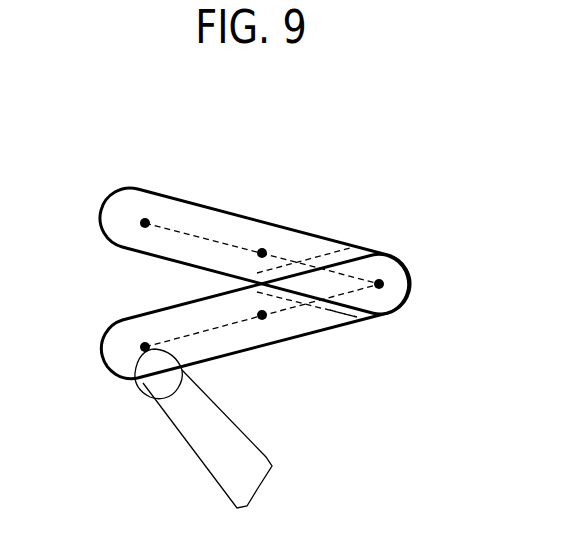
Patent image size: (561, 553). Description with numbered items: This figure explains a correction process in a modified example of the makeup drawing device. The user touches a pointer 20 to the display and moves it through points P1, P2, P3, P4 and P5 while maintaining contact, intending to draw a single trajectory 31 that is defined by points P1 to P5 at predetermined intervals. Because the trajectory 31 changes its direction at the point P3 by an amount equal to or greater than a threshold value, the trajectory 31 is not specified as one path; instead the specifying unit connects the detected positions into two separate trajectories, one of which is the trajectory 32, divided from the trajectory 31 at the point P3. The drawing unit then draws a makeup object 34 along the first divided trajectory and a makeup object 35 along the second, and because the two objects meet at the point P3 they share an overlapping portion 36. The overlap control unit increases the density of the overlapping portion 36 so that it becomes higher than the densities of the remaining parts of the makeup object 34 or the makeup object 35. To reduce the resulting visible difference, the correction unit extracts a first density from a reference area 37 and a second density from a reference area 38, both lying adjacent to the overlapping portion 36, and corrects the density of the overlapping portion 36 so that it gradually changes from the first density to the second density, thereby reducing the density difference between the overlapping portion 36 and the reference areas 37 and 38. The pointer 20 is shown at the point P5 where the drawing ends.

The pointer 20 is at (198, 439).
The trajectory 31 is at (262, 231).
The trajectory 32 is at (218, 241).
The makeup object 34 is at (362, 245).
The makeup object 35 is at (103, 370).
The overlapping portion 36 is at (343, 316).
The reference area 37 is at (323, 251).
The reference area 38 is at (315, 308).
The point P1 is at (145, 222).
The point P2 is at (262, 252).
The point P3 is at (379, 285).
The point P4 is at (262, 316).
The point P5 is at (145, 347).